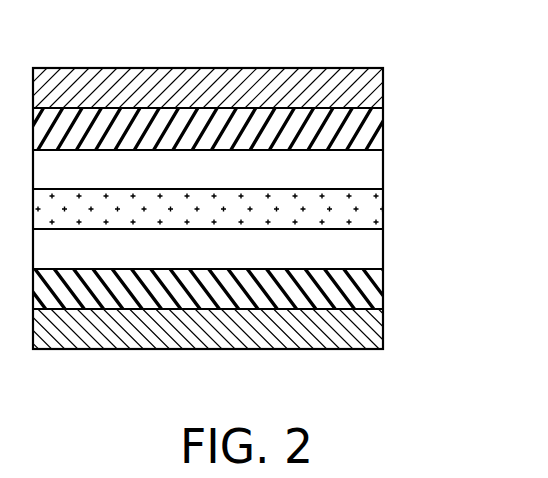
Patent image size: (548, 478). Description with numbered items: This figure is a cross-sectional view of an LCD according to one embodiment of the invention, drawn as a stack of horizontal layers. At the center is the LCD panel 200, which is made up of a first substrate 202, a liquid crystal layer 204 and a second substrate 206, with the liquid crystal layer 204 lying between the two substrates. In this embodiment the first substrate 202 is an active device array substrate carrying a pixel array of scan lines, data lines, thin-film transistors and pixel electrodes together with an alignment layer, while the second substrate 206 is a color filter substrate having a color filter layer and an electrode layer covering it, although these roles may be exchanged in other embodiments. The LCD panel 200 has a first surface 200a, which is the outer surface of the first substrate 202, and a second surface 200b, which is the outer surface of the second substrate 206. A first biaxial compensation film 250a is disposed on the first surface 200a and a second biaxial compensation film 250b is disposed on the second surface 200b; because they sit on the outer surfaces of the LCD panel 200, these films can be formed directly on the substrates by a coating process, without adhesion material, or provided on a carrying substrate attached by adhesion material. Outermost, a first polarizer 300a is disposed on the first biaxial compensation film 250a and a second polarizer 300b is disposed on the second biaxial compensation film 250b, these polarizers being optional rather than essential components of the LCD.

The LCD panel 200 is at (288, 206).
The first surface 200a is at (262, 270).
The second surface 200b is at (260, 148).
The first substrate 202 is at (383, 250).
The liquid crystal layer 204 is at (383, 212).
The second substrate 206 is at (383, 170).
The first biaxial compensation film 250a is at (383, 292).
The second biaxial compensation film 250b is at (383, 131).
The first polarizer 300a is at (383, 332).
The second polarizer 300b is at (383, 88).